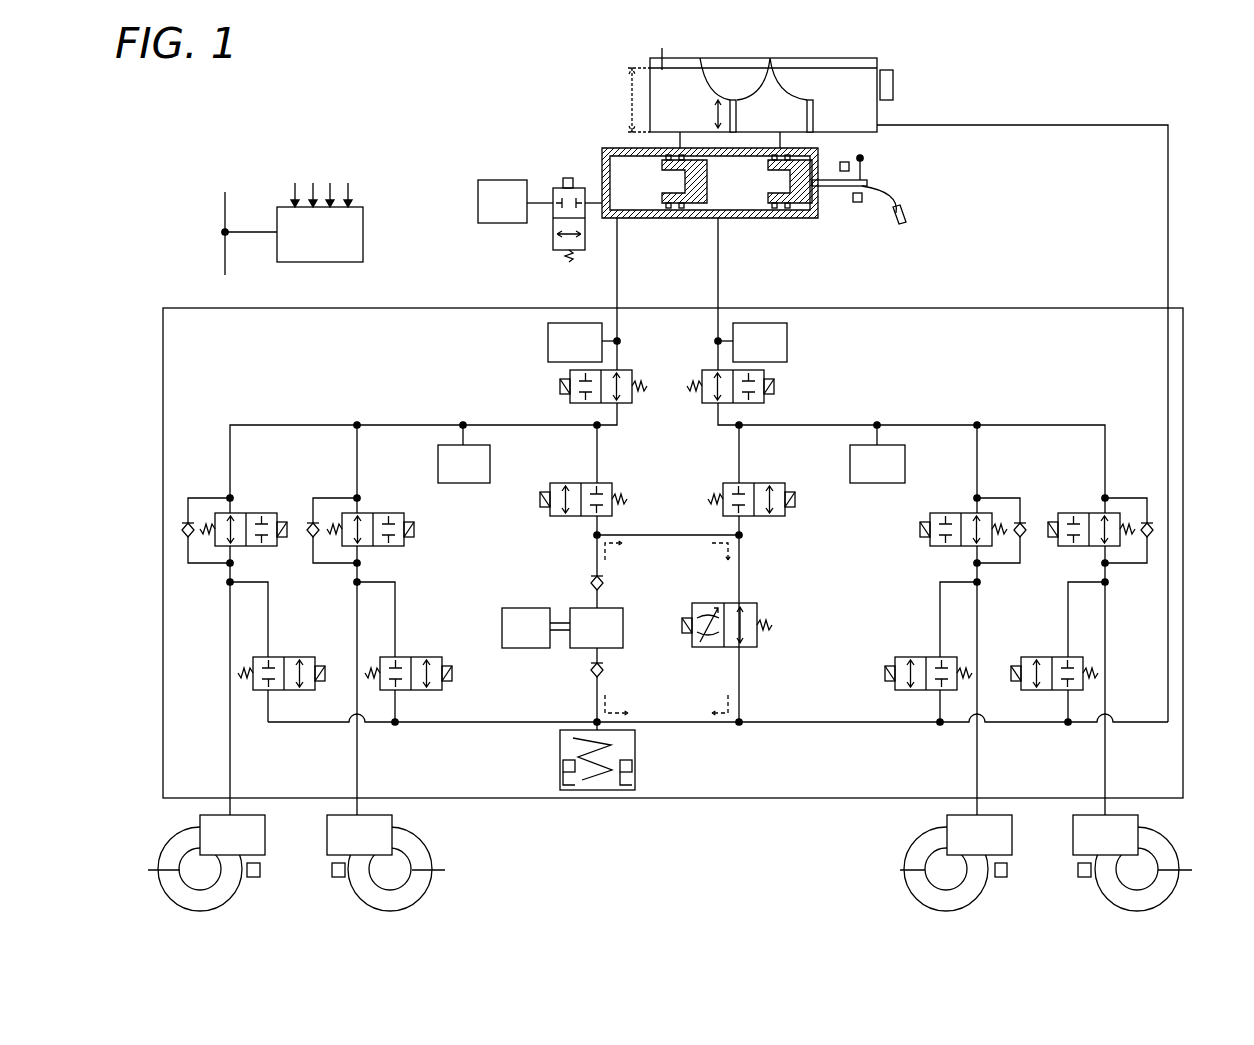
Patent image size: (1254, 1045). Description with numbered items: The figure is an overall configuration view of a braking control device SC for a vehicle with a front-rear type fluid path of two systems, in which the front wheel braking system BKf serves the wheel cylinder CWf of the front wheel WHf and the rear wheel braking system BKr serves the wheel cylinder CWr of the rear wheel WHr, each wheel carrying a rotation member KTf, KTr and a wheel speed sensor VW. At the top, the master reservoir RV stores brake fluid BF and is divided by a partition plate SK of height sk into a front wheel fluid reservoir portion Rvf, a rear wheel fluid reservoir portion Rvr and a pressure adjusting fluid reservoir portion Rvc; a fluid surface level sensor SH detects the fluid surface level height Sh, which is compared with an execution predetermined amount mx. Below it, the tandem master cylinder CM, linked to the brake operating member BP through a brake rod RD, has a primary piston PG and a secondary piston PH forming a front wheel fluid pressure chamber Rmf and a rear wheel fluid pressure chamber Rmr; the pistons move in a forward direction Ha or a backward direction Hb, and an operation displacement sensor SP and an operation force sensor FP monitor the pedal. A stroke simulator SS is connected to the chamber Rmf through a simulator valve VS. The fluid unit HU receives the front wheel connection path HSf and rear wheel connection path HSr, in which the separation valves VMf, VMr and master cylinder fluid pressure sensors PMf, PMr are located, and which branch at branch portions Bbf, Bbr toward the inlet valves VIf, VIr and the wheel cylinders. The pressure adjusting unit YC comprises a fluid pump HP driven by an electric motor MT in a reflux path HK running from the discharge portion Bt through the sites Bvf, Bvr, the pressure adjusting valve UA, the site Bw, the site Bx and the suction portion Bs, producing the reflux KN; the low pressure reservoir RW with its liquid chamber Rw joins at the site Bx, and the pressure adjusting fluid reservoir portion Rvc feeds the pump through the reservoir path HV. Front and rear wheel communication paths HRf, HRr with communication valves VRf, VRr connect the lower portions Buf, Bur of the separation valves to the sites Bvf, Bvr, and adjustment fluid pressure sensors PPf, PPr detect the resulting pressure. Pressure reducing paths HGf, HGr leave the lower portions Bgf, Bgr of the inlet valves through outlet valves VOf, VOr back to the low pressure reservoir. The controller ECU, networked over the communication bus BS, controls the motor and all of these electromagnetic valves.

The controller ECU is at (324, 207).
The in-vehicle communication bus BS is at (232, 235).
The stroke simulator SS is at (515, 201).
The simulator valve VS is at (565, 183).
The master reservoir RV is at (824, 58).
The front wheel fluid reservoir portion Rvf is at (676, 125).
The rear wheel fluid reservoir portion Rvr is at (757, 124).
The pressure adjusting fluid reservoir portion Rvc is at (832, 116).
The height sk is at (700, 58).
The partition plate SK is at (770, 58).
The brake fluid BF is at (660, 48).
The execution predetermined amount mx is at (877, 80).
The fluid surface level sensor SH is at (893, 80).
The fluid surface level height Sh is at (625, 100).
The master cylinder CM is at (609, 148).
The front wheel fluid pressure chamber Rmf is at (662, 181).
The rear wheel fluid pressure chamber Rmr is at (765, 181).
The secondary piston PH is at (691, 219).
The primary piston PG is at (797, 219).
The brake rod RD is at (826, 190).
The operation displacement sensor SP is at (844, 162).
The brake operating member BP is at (901, 205).
The operation force sensor FP is at (857, 202).
The forward direction Ha is at (821, 279).
The backward direction Hb is at (839, 279).
The braking control device SC is at (1004, 272).
The fluid unit HU is at (1057, 308).
The reservoir path HV is at (1168, 352).
The front wheel connection path HSf is at (617, 258).
The rear wheel connection path HSr is at (718, 258).
The branch portion Bbf is at (355, 423).
The branch portion Bbr is at (979, 423).
The front wheel braking system BKf is at (396, 397).
The rear wheel braking system BKr is at (907, 397).
The front wheel master cylinder fluid pressure sensor PMf is at (584, 342).
The rear wheel master cylinder fluid pressure sensor PMr is at (751, 342).
The front wheel adjustment fluid pressure sensor PPf is at (464, 454).
The rear wheel adjustment fluid pressure sensor PPr is at (877, 454).
The front wheel separation valve VMf is at (632, 403).
The rear wheel separation valve VMr is at (716, 370).
The lower portion of front wheel separation valve Buf is at (595, 427).
The lower portion of rear wheel separation valve Bur is at (741, 427).
The front wheel communication path HRf is at (598, 455).
The rear wheel communication path HRr is at (738, 455).
The front wheel communication valve VRf is at (560, 483).
The rear wheel communication valve VRr is at (778, 483).
The reflux path HK is at (680, 535).
The reflux KN is at (668, 628).
The downstream portion of discharge portion Bvf is at (595, 537).
The downstream portion of discharge portion Bvr is at (741, 537).
The discharge portion Bt is at (591, 584).
The fluid pump HP is at (596, 628).
The electric motor MT is at (536, 628).
The suction portion Bs is at (591, 655).
The site Bx is at (594, 720).
The liquid chamber Rw is at (560, 746).
The low pressure reservoir RW is at (635, 757).
The pressure adjusting valve UA is at (738, 603).
The pressure adjusting unit YC is at (790, 617).
The site Bw is at (741, 725).
The front wheel pressure reducing path HGf is at (340, 724).
The rear wheel pressure reducing path HGr is at (995, 724).
The front wheel inlet valve VIf is at (238, 513).
The rear wheel inlet valve VIr is at (968, 513).
The lower portion of front wheel inlet valve Bgf is at (228, 584).
The lower portion of rear wheel inlet valve Bgr is at (980, 584).
The front wheel outlet valve VOf is at (278, 657).
The rear wheel outlet valve VOr is at (930, 657).
The front wheel WHf is at (180, 840).
The rear wheel WHr is at (925, 840).
The front wheel cylinder CWf is at (296, 835).
The rear wheel cylinder CWr is at (1042, 835).
The front wheel rotation member KTf is at (291, 871).
The rear wheel rotation member KTr is at (1039, 871).
The wheel speed sensor VW is at (1080, 898).